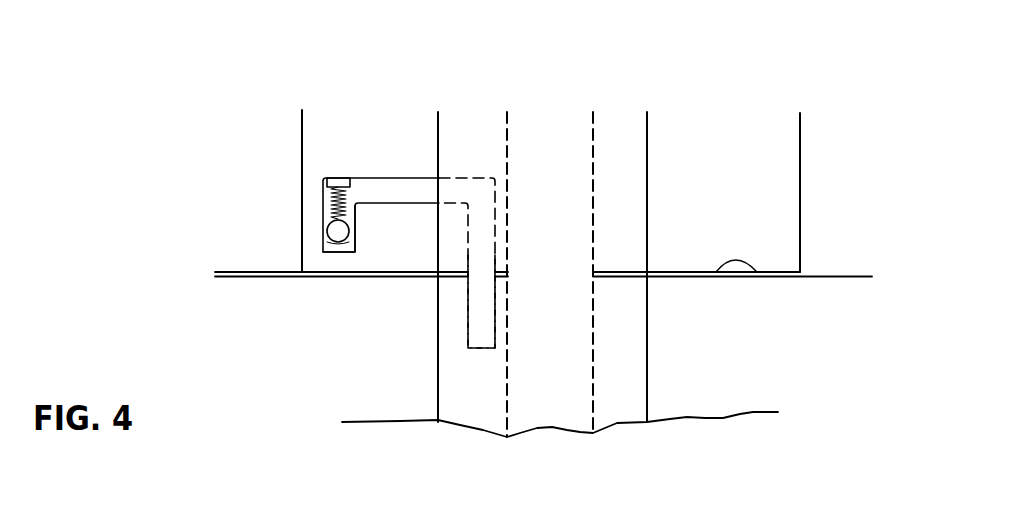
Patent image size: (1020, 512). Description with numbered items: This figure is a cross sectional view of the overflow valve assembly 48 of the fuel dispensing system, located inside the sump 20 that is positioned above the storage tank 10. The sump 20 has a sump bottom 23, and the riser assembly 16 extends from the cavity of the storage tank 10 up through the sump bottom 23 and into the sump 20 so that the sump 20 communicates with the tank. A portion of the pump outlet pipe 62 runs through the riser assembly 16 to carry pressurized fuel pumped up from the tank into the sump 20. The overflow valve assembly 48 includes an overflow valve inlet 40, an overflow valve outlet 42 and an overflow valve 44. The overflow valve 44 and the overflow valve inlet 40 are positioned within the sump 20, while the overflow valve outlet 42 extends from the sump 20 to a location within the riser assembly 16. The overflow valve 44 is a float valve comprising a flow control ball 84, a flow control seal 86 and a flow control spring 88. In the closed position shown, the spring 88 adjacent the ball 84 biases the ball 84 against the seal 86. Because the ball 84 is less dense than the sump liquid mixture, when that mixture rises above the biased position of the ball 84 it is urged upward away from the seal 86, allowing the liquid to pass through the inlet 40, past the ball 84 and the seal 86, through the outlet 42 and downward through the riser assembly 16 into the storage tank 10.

The storage tank 10 is at (832, 277).
The riser assembly 16 is at (648, 381).
The sump 20 is at (800, 160).
The sump bottom 23 is at (748, 268).
The overflow valve inlet 40 is at (323, 248).
The overflow valve outlet 42 is at (478, 323).
The overflow valve 44 is at (336, 178).
The overflow valve assembly 48 is at (365, 143).
The pump outlet pipe 62 is at (593, 333).
The flow control ball 84 is at (342, 229).
The flow control seal 86 is at (346, 243).
The flow control spring 88 is at (331, 212).